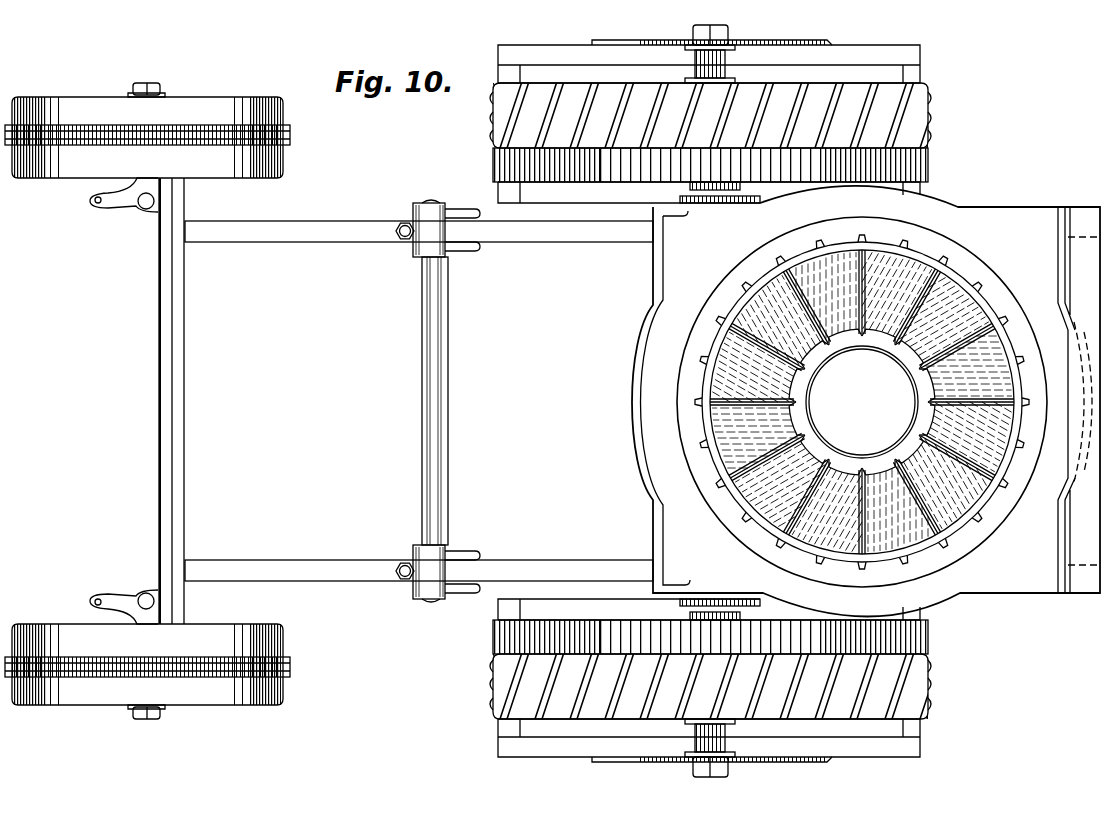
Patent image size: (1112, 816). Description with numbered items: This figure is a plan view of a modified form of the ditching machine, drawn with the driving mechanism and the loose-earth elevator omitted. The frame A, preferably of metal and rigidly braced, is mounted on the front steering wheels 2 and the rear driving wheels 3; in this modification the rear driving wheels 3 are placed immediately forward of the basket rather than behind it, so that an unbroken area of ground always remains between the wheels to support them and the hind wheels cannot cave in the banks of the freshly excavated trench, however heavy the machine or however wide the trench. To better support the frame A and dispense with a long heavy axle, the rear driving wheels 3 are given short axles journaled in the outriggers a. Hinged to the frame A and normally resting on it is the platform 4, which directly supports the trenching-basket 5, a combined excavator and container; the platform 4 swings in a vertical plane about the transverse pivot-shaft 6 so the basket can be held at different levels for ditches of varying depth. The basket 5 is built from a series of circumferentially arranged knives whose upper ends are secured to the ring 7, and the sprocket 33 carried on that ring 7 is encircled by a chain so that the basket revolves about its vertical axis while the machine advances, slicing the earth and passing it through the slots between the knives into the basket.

The front steering wheels 2 is at (96, 103).
The rear driving wheels 3 is at (707, 401).
The platform 4 is at (838, 401).
The trenching-basket 5 is at (861, 401).
The transverse pivot-shaft 6 is at (436, 401).
The ring 7 is at (714, 371).
The sprocket 33 is at (862, 410).
The outriggers a is at (551, 46).
The frame A is at (316, 566).